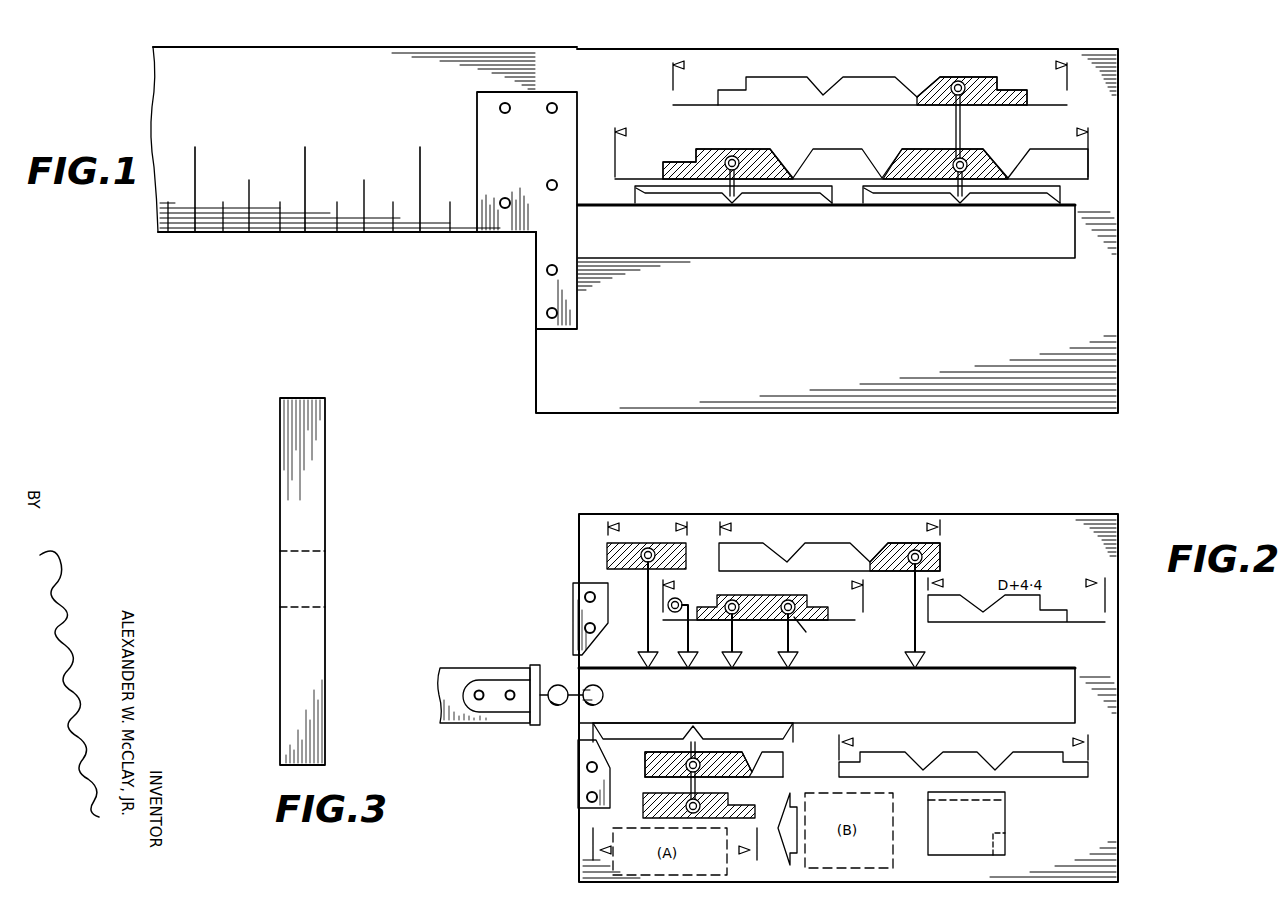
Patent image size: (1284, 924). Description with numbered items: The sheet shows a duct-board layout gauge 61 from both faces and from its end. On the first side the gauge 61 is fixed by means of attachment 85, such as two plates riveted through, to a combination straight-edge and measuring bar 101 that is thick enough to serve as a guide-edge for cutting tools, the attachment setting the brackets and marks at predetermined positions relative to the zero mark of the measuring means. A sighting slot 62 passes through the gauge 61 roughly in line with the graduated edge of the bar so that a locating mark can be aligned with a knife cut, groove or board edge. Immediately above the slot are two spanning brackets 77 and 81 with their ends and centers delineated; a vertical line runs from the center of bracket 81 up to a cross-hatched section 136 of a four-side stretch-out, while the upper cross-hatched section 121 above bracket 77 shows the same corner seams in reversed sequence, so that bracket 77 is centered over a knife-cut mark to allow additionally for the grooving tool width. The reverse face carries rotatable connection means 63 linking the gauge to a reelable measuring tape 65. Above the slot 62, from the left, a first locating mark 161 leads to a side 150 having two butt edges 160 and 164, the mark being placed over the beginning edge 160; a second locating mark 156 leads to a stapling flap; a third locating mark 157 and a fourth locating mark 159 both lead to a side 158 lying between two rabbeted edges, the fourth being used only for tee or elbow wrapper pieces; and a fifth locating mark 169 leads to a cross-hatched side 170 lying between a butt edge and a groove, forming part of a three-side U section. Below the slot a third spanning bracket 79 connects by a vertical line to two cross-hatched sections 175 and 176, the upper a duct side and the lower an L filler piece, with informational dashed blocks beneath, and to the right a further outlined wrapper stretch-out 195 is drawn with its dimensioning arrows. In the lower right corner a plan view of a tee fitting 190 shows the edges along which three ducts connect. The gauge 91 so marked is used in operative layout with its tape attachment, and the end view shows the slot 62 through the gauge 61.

In FIG. 1, the gauge 61 is at (627, 47).
In FIG. 3, the gauge 61 is at (330, 452).
In FIG. 1, the slot 62 is at (957, 238).
In FIG. 3, the slot 62 is at (320, 600).
In FIG. 2, the slot 62 is at (1025, 709).
In FIG. 1, the combination straight-edge and measuring bar 101 is at (352, 58).
In FIG. 1, the means of attachment 85 is at (478, 115).
In FIG. 1, the upper cross-hatched section 121 is at (947, 73).
In FIG. 1, the cross-hatched section 136 is at (684, 161).
In FIG. 1, the spanning bracket 77 is at (1060, 194).
In FIG. 1, the spanning bracket 81 is at (637, 208).
In FIG. 2, the side 150 is at (607, 545).
In FIG. 2, the butt edge 164 is at (607, 557).
In FIG. 2, the right hand edge 160 is at (690, 545).
In FIG. 2, the first locating mark 161 is at (646, 672).
In FIG. 2, the gauge 91 is at (868, 514).
In FIG. 2, the side 170 is at (898, 545).
In FIG. 2, the fifth locating mark 169 is at (916, 672).
In FIG. 2, the side 158 is at (752, 603).
In FIG. 2, the second locating mark 156 is at (692, 672).
In FIG. 2, the third locating mark 157 is at (732, 672).
In FIG. 2, the fourth locating mark 159 is at (790, 672).
In FIG. 2, the measuring tape 65 is at (493, 683).
In FIG. 2, the rotatable connection means 63 is at (558, 706).
In FIG. 2, the third spanning bracket 79 is at (578, 768).
In FIG. 2, the cross-hatched section 175 is at (665, 758).
In FIG. 2, the cross-hatched section 176 is at (643, 803).
In FIG. 2, the template 195 is at (973, 767).
In FIG. 2, the tee fitting 190 is at (943, 843).